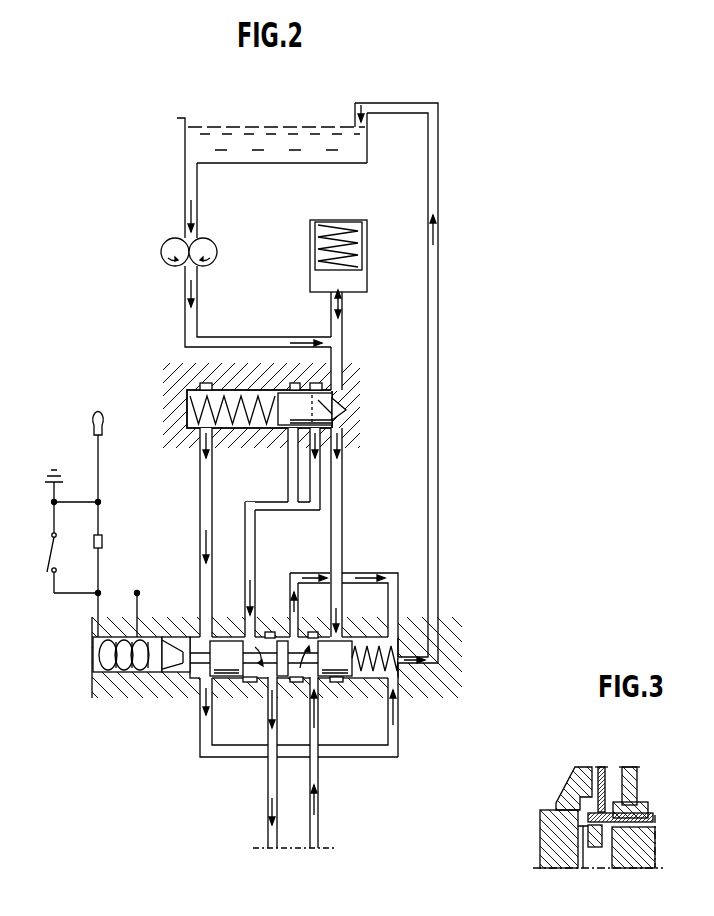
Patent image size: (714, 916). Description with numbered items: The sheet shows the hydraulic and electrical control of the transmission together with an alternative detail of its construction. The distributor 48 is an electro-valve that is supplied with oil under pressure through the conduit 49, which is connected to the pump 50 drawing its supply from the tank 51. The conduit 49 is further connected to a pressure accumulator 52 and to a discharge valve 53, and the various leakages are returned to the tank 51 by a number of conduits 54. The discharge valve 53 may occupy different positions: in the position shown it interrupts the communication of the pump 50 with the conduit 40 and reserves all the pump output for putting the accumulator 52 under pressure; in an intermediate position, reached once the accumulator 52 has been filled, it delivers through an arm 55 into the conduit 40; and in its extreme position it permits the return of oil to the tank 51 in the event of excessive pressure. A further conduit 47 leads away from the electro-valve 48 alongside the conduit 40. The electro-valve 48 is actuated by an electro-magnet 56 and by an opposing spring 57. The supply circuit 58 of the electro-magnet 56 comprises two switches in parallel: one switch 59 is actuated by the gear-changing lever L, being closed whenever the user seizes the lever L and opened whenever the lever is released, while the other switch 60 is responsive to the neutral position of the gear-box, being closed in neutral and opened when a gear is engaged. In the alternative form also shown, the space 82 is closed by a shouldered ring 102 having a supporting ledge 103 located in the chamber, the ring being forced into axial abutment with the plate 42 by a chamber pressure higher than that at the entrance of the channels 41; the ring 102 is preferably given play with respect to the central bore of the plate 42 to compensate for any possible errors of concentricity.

In FIG. 2, the conduit 40 is at (267, 796).
In FIG. 3, the channels 41 is at (595, 788).
In FIG. 3, the plate 42 is at (603, 767).
In FIG. 2, the conduit 47 is at (311, 825).
In FIG. 2, the distributor 48 is at (162, 697).
In FIG. 2, the conduit 49 is at (343, 346).
In FIG. 2, the pump 50 is at (162, 249).
In FIG. 2, the tank 51 is at (263, 124).
In FIG. 2, the pressure accumulator 52 is at (367, 245).
In FIG. 2, the discharge valve 53 is at (168, 396).
In FIG. 2, the conduits 54 is at (438, 383).
In FIG. 2, the arm 55 is at (245, 566).
In FIG. 2, the electro-magnet 56 is at (93, 654).
In FIG. 2, the opposing spring 57 is at (364, 645).
In FIG. 2, the supply circuit 58 is at (97, 601).
In FIG. 2, the switch 59 is at (106, 541).
In FIG. 2, the switch 60 is at (48, 558).
In FIG. 2, the gear-changing lever L is at (102, 408).
In FIG. 3, the space 82 is at (578, 807).
In FIG. 3, the shouldered ring 102 is at (590, 815).
In FIG. 3, the supporting ledge 103 is at (616, 797).